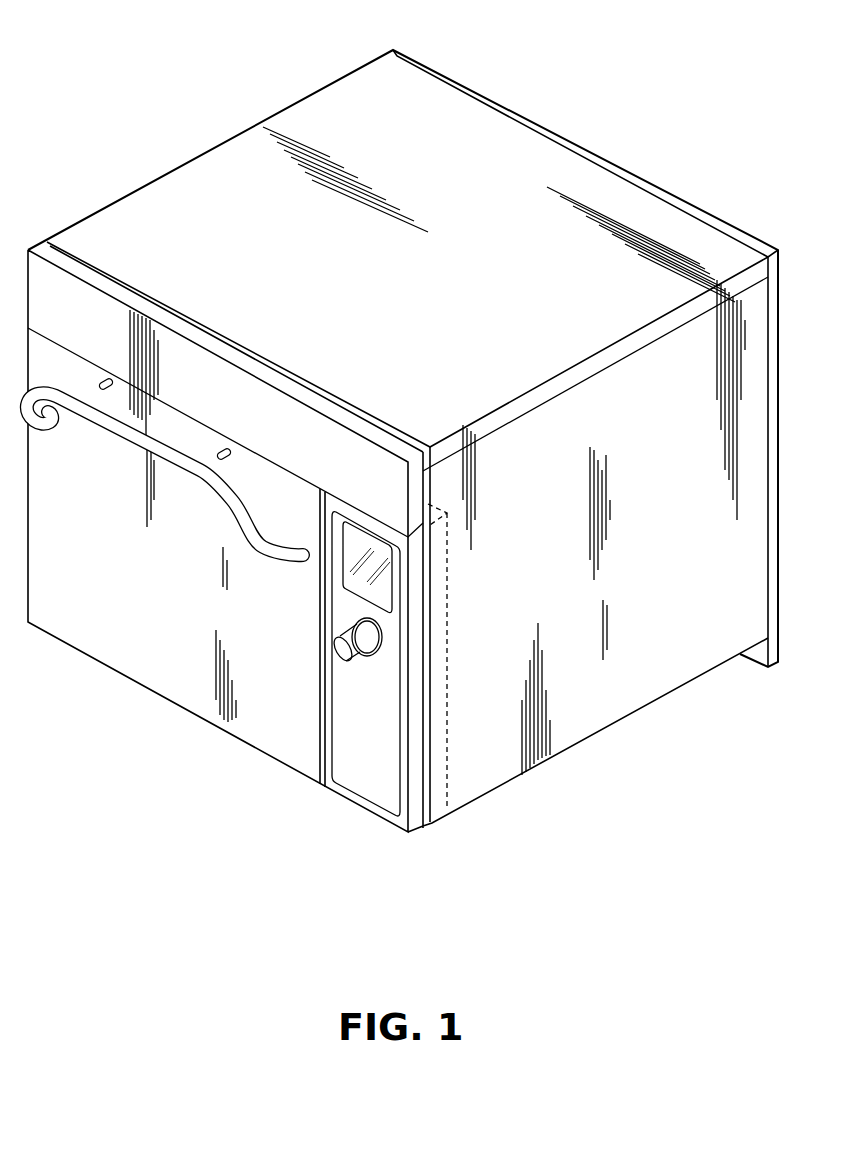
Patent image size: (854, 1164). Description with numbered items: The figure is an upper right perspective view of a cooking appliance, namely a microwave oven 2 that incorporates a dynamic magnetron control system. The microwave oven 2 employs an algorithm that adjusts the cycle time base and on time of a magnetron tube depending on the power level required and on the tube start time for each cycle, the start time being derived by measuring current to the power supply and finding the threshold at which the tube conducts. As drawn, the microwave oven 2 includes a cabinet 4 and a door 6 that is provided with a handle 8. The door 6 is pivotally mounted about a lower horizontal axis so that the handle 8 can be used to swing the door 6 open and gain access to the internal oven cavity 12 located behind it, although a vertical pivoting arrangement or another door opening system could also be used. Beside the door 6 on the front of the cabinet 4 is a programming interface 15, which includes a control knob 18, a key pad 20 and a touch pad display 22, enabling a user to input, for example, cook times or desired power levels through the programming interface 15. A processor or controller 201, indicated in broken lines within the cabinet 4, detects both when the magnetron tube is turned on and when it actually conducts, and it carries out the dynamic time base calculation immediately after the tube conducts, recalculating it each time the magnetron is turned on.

The microwave oven 2 is at (577, 84).
The cabinet 4 is at (223, 139).
The door 6 is at (157, 667).
The handle 8 is at (127, 417).
The internal oven cavity 12 is at (196, 509).
The programming interface 15 is at (374, 700).
The control knob 18 is at (374, 641).
The key pad 20 is at (372, 782).
The touch pad display 22 is at (392, 576).
The processor or controller 201 is at (448, 763).